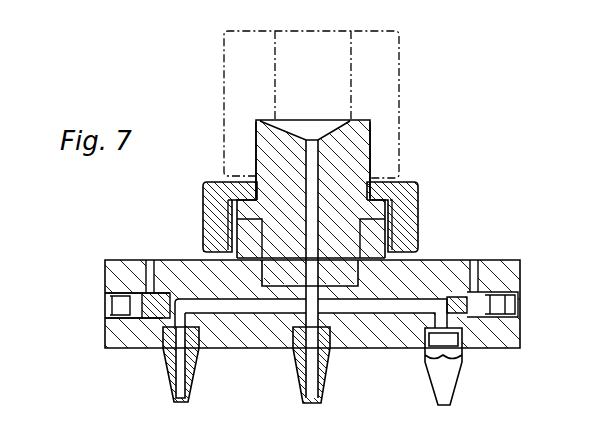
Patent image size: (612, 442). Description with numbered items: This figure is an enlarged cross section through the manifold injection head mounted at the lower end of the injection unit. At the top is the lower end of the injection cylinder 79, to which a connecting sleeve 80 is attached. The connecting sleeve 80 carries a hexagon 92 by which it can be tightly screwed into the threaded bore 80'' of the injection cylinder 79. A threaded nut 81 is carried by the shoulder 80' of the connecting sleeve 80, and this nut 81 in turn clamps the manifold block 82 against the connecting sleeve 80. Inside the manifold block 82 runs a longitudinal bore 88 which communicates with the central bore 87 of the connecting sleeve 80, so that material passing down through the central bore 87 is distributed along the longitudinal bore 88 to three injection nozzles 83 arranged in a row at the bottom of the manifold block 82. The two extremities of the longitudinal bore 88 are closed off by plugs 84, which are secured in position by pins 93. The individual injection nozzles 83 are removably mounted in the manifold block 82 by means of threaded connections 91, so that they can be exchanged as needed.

The injection cylinder 79 is at (388, 82).
The connecting sleeve 80 is at (318, 193).
The shoulder 80' is at (272, 216).
The threaded bore 80'' is at (265, 160).
The central bore 87 is at (312, 218).
The nut 81 is at (403, 210).
The hexagon 92 is at (238, 252).
The manifold block 82 is at (430, 275).
The threaded connections 91 is at (105, 335).
The longitudinal bore 88 is at (383, 305).
The plugs 84 is at (507, 305).
The pins 93 is at (473, 285).
The injection nozzles 83 is at (296, 365).